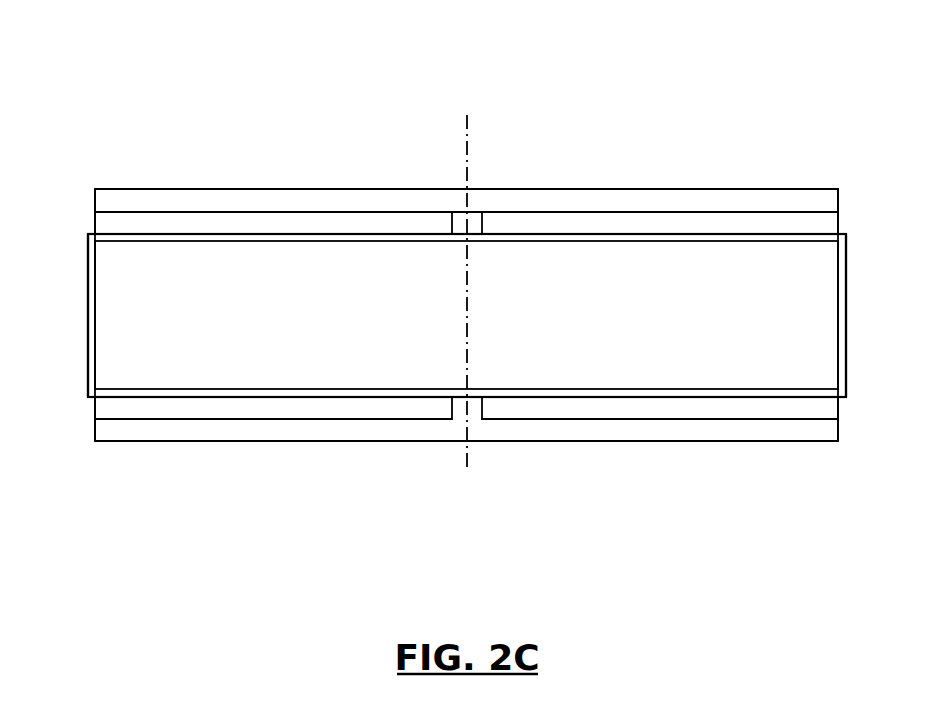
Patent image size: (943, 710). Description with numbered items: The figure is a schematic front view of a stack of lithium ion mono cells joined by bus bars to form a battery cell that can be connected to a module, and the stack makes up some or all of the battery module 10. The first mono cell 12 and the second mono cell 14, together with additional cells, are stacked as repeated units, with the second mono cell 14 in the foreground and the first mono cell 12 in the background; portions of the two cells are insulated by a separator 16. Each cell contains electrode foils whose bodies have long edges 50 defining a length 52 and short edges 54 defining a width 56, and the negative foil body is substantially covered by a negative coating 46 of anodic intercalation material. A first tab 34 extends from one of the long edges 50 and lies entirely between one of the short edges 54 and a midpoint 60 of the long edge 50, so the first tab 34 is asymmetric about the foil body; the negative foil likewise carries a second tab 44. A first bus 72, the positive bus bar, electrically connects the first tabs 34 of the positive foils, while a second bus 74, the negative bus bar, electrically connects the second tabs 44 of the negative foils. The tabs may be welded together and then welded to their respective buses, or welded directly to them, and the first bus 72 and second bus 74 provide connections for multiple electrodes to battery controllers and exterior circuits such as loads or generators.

The battery module 10 is at (106, 79).
The first mono cell 12 is at (70, 207).
The second mono cell 14 is at (868, 205).
The separator 16 is at (847, 335).
The first tab 34 is at (328, 222).
The second tab 44 is at (257, 410).
The negative coating 46 is at (388, 316).
The long edges 50 is at (325, 397).
The length 52 is at (95, 521).
The short edges 54 is at (89, 360).
The width 56 is at (30, 240).
The midpoint 60 is at (467, 157).
The first bus 72 is at (222, 197).
The second bus 74 is at (612, 425).